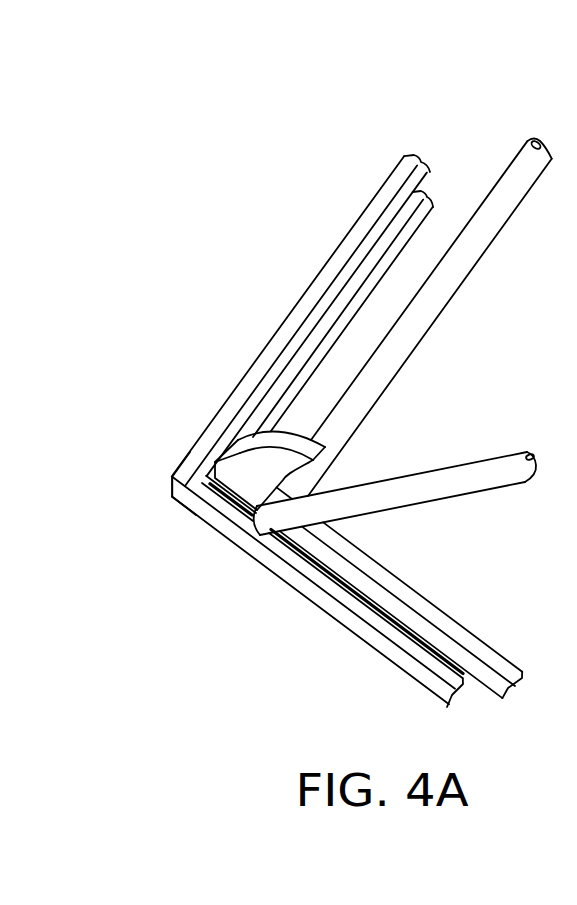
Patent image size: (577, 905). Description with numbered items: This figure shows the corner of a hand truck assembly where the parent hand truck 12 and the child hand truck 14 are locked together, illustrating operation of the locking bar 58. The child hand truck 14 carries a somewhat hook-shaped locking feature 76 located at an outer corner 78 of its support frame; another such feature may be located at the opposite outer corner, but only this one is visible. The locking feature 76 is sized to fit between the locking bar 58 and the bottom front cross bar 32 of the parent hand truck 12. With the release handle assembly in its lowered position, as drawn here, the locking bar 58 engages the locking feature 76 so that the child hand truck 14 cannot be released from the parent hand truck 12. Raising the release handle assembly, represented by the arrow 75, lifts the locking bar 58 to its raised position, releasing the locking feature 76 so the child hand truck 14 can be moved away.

The parent hand truck 12 is at (325, 248).
The child hand truck 14 is at (362, 368).
The bottom front cross bar 32 is at (283, 323).
The locking bar 58 is at (443, 315).
The arrow 75 is at (472, 367).
The locking feature 76 is at (242, 462).
The outer corner 78 is at (183, 526).